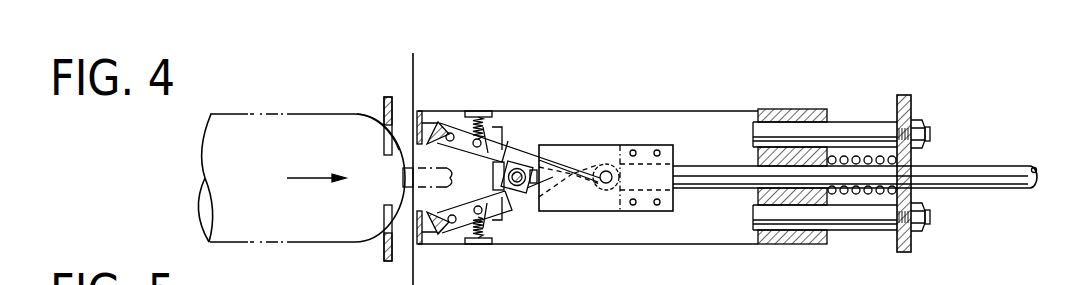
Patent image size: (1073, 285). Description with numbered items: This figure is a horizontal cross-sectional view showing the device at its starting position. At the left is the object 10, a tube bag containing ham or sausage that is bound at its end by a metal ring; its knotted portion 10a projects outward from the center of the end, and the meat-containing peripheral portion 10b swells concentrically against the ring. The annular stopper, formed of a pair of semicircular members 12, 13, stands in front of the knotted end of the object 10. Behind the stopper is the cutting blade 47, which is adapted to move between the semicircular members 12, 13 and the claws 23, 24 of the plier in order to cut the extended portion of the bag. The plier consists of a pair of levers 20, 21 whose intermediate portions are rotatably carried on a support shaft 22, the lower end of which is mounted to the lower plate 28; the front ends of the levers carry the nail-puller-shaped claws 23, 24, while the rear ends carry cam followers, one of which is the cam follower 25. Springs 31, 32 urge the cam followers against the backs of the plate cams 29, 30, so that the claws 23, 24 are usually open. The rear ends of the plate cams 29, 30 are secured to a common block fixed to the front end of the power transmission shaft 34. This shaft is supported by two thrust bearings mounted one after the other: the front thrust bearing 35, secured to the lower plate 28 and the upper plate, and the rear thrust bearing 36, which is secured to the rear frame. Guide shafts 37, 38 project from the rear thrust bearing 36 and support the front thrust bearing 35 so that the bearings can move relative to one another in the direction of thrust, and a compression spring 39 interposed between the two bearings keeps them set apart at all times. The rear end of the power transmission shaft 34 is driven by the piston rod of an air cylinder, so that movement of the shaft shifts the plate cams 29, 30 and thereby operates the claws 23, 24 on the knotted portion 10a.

The object 10 is at (250, 143).
The knotted portion 10a is at (370, 117).
The peripheral portion 10b is at (456, 182).
The semicircular member 12 is at (387, 97).
The semicircular member 13 is at (385, 250).
The cutting blade 47 is at (416, 64).
The lower plate 28 is at (665, 120).
The claw 23 is at (441, 122).
The claw 24 is at (441, 232).
The lever 20 is at (507, 147).
The lever 21 is at (513, 199).
The spring 31 is at (480, 111).
The spring 32 is at (483, 238).
The support shaft 22 is at (516, 166).
The plate cam 30 is at (584, 153).
The plate cam 29 is at (567, 175).
The cam follower 25 is at (606, 168).
The power transmission shaft 34 is at (723, 172).
The front thrust bearing 35 is at (793, 108).
The guide shaft 37 is at (857, 130).
The guide shaft 38 is at (837, 217).
The rear thrust bearing 36 is at (912, 156).
The compression spring 39 is at (873, 192).